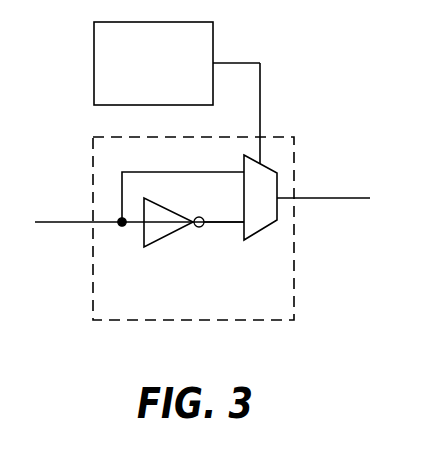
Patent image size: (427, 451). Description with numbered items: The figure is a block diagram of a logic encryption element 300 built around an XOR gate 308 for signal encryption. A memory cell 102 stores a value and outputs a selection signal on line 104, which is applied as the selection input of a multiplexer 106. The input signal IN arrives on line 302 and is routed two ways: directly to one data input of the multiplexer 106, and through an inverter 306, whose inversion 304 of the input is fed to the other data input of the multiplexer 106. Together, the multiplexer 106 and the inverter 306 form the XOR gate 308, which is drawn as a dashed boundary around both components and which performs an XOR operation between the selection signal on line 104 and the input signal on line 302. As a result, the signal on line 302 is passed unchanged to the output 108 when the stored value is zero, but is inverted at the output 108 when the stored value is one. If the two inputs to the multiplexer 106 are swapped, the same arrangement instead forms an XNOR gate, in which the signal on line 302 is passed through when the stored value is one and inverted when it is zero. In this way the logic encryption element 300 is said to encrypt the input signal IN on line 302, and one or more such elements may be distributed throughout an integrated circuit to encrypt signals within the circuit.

The memory cell 102 is at (135, 100).
The line 104 is at (260, 72).
The multiplexer 106 is at (268, 224).
The output 108 is at (330, 199).
The logic encryption element 300 is at (195, 250).
The input signal 302 is at (93, 223).
The inversion 304 is at (227, 222).
The inverter 306 is at (155, 242).
The XOR gate 308 is at (295, 300).